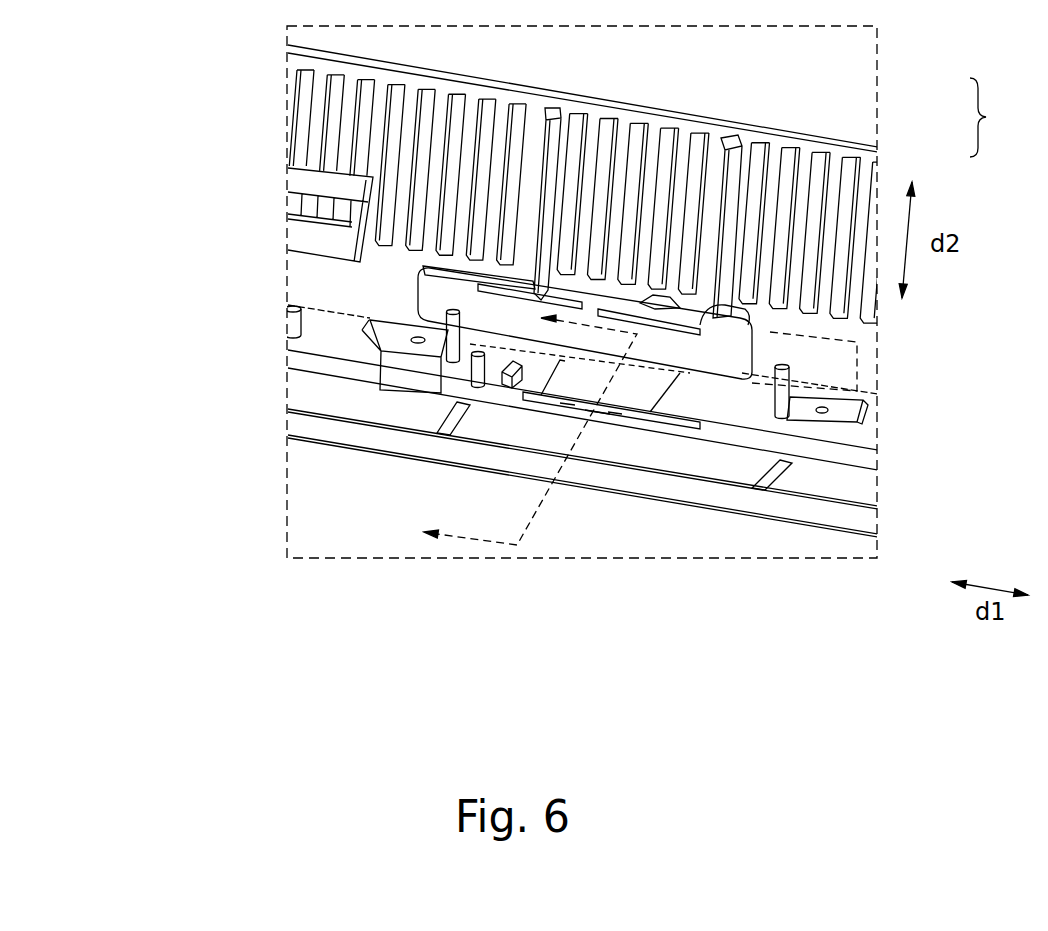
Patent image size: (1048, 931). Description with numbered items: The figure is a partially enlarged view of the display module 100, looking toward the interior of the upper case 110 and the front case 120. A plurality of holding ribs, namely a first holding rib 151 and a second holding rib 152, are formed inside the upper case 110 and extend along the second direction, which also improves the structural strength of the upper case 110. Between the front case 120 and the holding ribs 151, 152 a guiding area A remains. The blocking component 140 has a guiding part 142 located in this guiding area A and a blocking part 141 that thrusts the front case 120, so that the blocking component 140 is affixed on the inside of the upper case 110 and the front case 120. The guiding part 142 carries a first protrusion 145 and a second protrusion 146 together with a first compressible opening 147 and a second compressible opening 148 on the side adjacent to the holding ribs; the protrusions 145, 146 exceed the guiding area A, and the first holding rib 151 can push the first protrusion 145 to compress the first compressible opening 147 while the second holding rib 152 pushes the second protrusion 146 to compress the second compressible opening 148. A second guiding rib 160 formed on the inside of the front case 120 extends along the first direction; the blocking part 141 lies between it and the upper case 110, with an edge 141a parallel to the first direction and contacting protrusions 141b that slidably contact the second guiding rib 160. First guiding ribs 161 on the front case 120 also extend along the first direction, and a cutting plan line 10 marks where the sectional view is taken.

The display module 100 is at (84, 620).
The upper case 110 is at (300, 63).
The front case 120 is at (305, 393).
The blocking component 140 is at (979, 117).
The blocking part 141 is at (623, 392).
The edge of the blocking part 141a is at (597, 410).
The contacting protrusions 141b is at (568, 407).
The guiding part 142 is at (417, 318).
The first protrusion 145 is at (530, 283).
The second protrusion 146 is at (652, 302).
The first compressible opening 147 is at (480, 290).
The second compressible opening 148 is at (722, 322).
The first holding rib 151 is at (552, 115).
The second holding rib 152 is at (728, 147).
The second guiding rib 160 is at (535, 400).
The first guiding ribs 161 is at (654, 412).
The cutting plan line 10 is at (510, 426).
The guiding area A is at (857, 372).